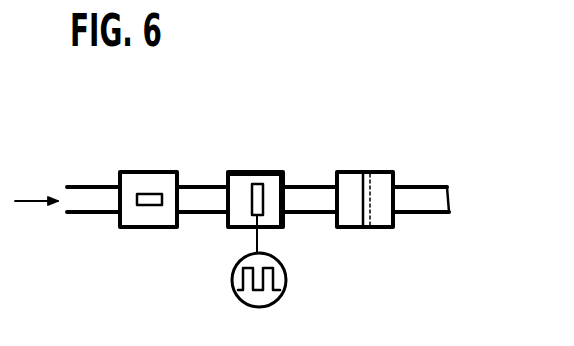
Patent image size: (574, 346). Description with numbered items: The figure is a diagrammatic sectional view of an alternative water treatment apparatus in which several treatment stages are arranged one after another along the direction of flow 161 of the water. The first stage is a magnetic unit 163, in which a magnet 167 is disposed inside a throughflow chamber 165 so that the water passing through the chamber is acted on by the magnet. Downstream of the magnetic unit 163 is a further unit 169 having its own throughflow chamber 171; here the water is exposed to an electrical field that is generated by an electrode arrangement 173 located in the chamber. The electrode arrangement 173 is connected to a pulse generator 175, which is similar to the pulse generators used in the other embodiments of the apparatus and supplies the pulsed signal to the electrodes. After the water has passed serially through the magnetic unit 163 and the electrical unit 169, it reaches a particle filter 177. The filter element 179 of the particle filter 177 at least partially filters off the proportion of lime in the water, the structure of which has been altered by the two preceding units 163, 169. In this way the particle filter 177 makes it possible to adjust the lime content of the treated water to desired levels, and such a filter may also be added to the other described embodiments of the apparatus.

The direction of flow 161 is at (40, 197).
The magnetic unit 163 is at (131, 166).
The throughflow chamber 165 is at (135, 232).
The magnet 167 is at (152, 205).
The unit 169 is at (237, 166).
The throughflow chamber 171 is at (272, 180).
The electrode arrangement 173 is at (259, 210).
The pulse generator 175 is at (232, 290).
The particle filter 177 is at (385, 166).
The filter element 179 is at (378, 225).